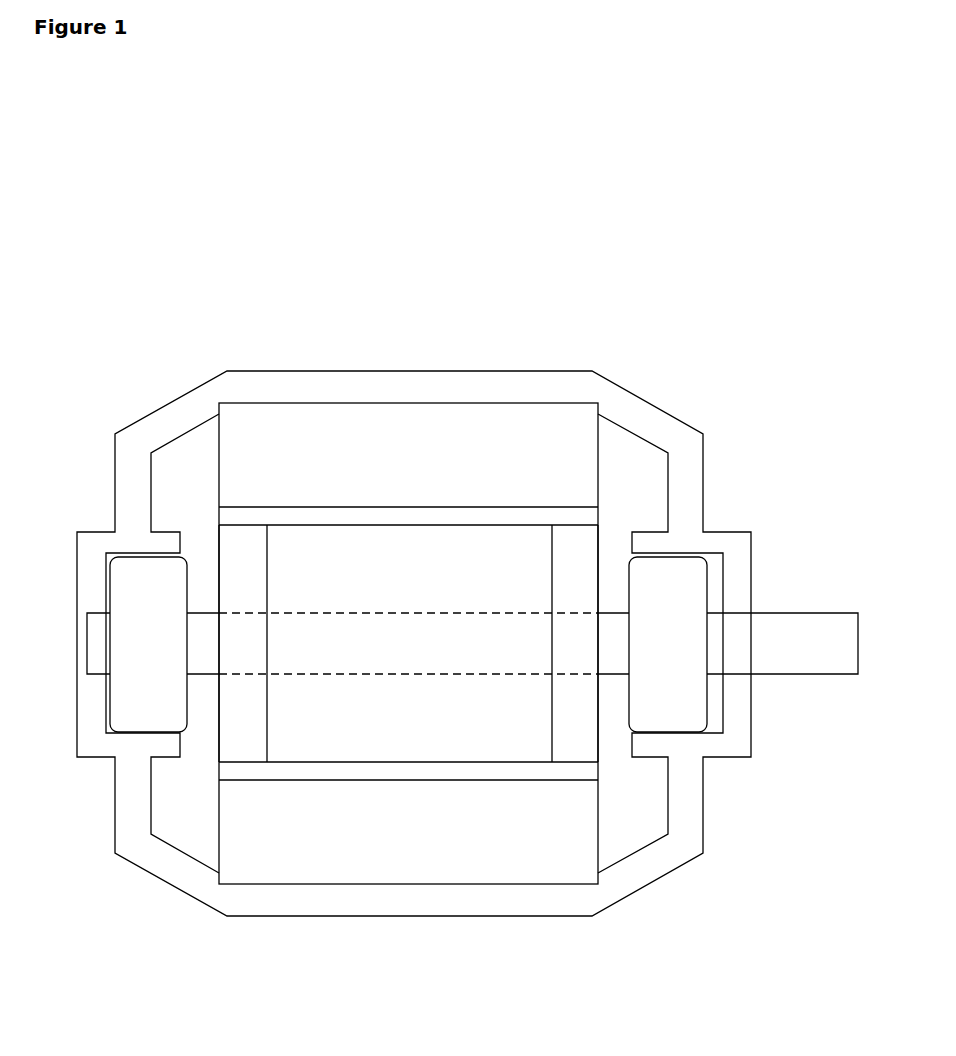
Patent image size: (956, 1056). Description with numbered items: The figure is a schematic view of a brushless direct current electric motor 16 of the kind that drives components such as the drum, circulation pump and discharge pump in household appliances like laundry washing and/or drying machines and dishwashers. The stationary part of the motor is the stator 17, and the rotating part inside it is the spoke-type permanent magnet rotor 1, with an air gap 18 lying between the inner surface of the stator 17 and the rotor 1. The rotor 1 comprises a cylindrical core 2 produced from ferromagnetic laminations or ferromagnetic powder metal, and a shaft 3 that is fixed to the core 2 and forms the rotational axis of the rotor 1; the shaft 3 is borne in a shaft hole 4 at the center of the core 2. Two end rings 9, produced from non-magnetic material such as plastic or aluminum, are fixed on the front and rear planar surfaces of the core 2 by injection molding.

The spoke-type permanent magnet rotor 1 is at (406, 581).
The cylindrical core 2 is at (319, 550).
The shaft 3 is at (808, 625).
The shaft hole 4 is at (490, 600).
The end rings 9 is at (241, 552).
The brushless direct current electric motor 16 is at (467, 543).
The stator 17 is at (386, 413).
The air gap 18 is at (484, 510).